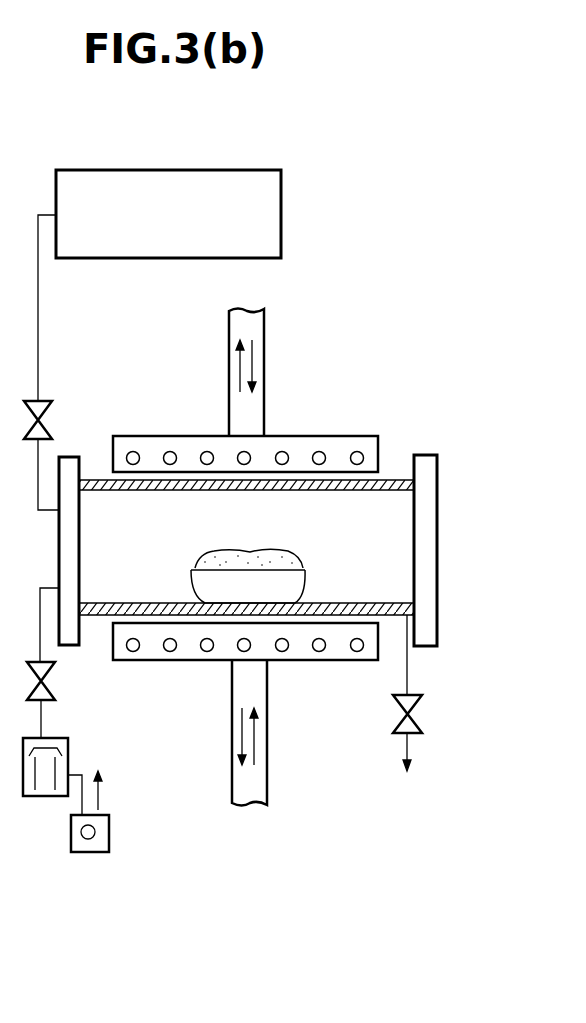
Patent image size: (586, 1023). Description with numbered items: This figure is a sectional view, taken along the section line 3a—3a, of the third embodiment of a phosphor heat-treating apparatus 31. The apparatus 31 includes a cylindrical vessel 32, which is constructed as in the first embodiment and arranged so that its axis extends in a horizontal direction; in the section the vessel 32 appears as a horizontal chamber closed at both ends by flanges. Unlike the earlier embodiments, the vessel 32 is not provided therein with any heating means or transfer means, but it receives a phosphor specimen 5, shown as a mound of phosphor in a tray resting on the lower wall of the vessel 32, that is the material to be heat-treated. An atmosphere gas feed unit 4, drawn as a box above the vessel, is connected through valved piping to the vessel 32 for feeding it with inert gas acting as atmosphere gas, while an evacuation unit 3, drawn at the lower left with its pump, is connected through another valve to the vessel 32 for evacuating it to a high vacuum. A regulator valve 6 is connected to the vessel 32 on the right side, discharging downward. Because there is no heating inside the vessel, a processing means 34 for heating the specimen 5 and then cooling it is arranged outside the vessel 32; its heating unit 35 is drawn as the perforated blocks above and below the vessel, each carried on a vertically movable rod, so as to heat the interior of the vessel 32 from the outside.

The phosphor heat-treating apparatus 31 is at (135, 142).
The atmosphere gas feed unit 4 is at (283, 197).
The evacuation unit 3 is at (34, 797).
The section line 3a— 3a is at (105, 426).
The cylindrical vessel 32 is at (394, 480).
The processing means 34 is at (340, 436).
The heating unit 35 is at (245, 714).
The phosphor specimen 5 is at (290, 556).
The regulator valve 6 is at (416, 733).